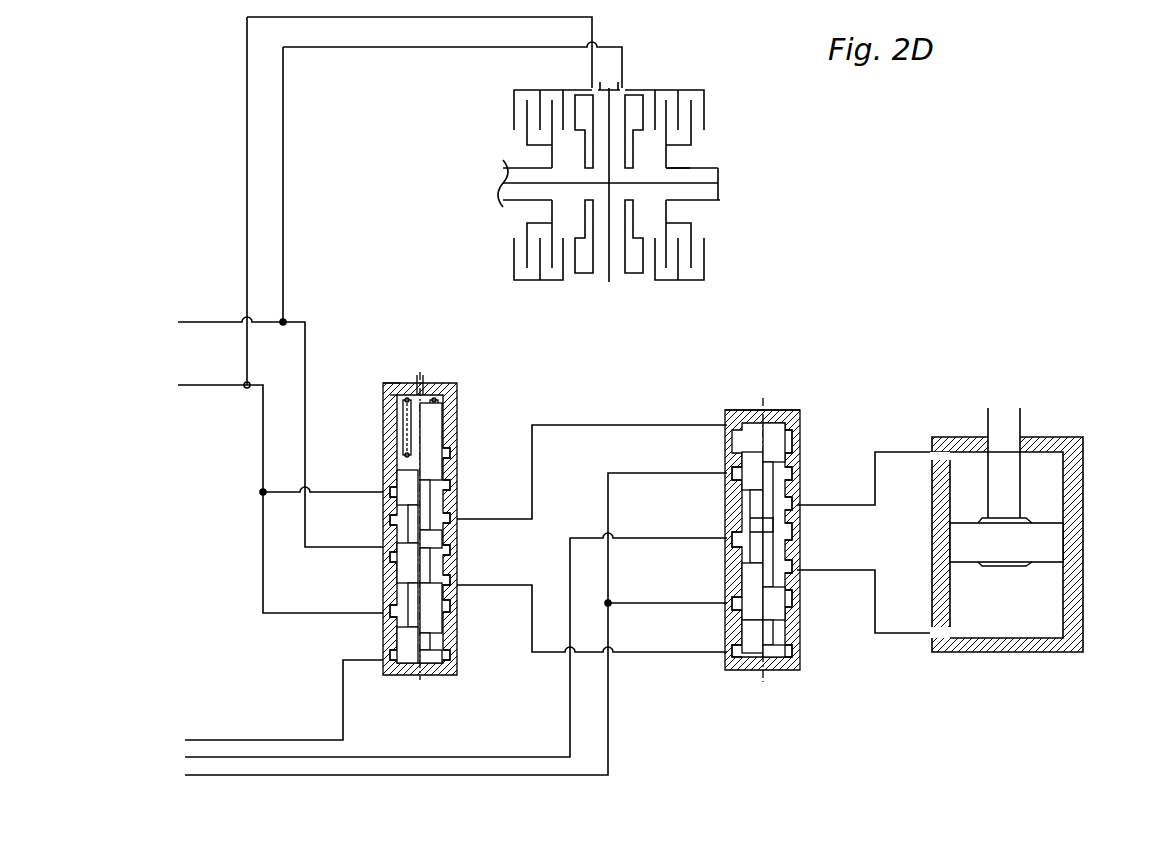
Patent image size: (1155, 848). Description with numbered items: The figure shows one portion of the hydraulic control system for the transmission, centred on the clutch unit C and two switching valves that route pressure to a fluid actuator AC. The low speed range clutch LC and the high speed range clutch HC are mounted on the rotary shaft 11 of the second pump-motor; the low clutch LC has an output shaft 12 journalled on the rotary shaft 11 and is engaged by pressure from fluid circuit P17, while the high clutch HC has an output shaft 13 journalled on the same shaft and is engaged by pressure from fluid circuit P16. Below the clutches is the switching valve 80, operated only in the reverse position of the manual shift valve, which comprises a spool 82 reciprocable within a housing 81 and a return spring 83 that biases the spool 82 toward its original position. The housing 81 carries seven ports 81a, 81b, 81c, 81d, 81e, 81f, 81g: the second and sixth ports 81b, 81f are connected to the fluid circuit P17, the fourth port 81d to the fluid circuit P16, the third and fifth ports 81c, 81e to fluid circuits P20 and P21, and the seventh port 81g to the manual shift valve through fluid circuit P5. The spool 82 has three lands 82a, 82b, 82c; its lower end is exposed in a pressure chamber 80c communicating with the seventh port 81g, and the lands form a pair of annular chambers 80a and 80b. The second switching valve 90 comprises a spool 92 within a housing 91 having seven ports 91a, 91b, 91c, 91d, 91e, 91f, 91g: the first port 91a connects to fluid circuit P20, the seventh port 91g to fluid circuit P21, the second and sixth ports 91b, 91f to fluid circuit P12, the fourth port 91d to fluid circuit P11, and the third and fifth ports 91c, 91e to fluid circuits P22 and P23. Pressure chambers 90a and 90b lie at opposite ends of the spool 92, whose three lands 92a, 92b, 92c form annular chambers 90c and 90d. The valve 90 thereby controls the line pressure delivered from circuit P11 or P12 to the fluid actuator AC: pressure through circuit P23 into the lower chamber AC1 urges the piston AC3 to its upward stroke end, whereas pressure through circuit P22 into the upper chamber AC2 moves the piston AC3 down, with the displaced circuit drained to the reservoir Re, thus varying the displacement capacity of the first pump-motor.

The clutch C is at (604, 153).
The low speed range clutch LC is at (528, 117).
The high speed range clutch HC is at (678, 118).
The rotary shaft 11 is at (712, 184).
The output shaft 12 is at (517, 202).
The output shaft 13 is at (693, 167).
The switching valve 80 is at (417, 508).
The housing 81 is at (397, 577).
The first port 81a is at (390, 383).
The second port 81b is at (388, 488).
The third port 81c is at (452, 516).
The fourth port 81d is at (388, 557).
The fifth port 81e is at (454, 582).
The sixth port 81f is at (388, 612).
The seventh port 81g is at (387, 662).
The spool 82 is at (422, 448).
The land 82a is at (440, 455).
The land 82b is at (392, 523).
The land 82c is at (440, 600).
The return spring 83 is at (432, 385).
The annular chamber 80a is at (447, 486).
The annular chamber 80b is at (448, 551).
The pressure chamber 80c is at (435, 662).
The reservoir Re is at (385, 398).
The second switching valve 90 is at (759, 521).
The housing 91 is at (735, 490).
The first port 91a is at (735, 420).
The second port 91b is at (730, 474).
The third port 91c is at (794, 507).
The fourth port 91d is at (729, 540).
The fifth port 91e is at (796, 568).
The sixth port 91f is at (733, 603).
The seventh port 91g is at (733, 652).
The spool 92 is at (760, 437).
The land 92a is at (790, 458).
The land 92b is at (770, 520).
The land 92c is at (780, 605).
The pressure chamber 90a is at (770, 425).
The pressure chamber 90b is at (775, 660).
The annular chamber 90c is at (790, 477).
The annular chamber 90d is at (790, 537).
The fluid circuit P5 is at (283, 740).
The fluid circuit P11 is at (625, 537).
The fluid circuit P12 is at (618, 473).
The fluid circuit P16 is at (283, 107).
The fluid circuit P17 is at (246, 113).
The fluid circuit P20 is at (598, 425).
The fluid circuit P21 is at (526, 585).
The fluid circuit P22 is at (876, 478).
The fluid circuit P23 is at (876, 579).
The fluid actuator AC is at (1034, 541).
The lower chamber AC1 is at (1013, 620).
The upper chamber AC2 is at (1047, 485).
The piston AC3 is at (967, 543).